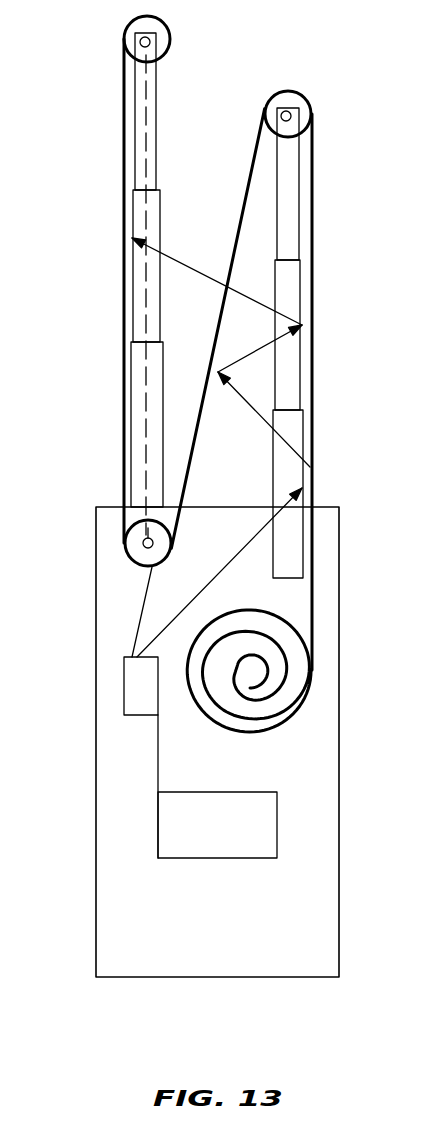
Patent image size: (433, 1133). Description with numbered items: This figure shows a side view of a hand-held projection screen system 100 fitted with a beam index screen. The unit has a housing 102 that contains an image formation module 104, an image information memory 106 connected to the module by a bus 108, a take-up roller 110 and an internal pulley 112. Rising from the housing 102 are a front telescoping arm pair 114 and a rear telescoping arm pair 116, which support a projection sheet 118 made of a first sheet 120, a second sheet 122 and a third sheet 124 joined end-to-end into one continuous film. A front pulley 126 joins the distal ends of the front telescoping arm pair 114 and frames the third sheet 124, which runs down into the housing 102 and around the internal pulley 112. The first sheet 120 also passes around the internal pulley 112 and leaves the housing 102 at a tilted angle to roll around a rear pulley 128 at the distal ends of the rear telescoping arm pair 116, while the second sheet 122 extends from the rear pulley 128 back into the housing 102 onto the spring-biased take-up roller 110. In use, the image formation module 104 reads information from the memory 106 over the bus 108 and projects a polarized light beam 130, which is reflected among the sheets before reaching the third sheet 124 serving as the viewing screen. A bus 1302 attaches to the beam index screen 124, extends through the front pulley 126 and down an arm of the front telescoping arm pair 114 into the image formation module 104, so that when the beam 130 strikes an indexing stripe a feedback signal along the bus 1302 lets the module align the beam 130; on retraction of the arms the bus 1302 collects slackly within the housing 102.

The hand-held projection screen system 100 is at (146, 1005).
The housing 102 is at (96, 598).
The image formation module 104 is at (124, 673).
The image information memory 106 is at (168, 860).
The bus 108 is at (157, 763).
The take-up roller 110 is at (282, 723).
The internal pulley 112 is at (133, 542).
The front telescoping arm pair 114 is at (140, 432).
The rear telescoping arm pair 116 is at (290, 545).
The projection sheet 118 is at (313, 425).
The first sheet 120 is at (247, 203).
The second sheet 122 is at (312, 200).
The third sheet 124 is at (124, 308).
The front pulley 126 is at (135, 28).
The rear pulley 128 is at (297, 104).
The linearly polarized light beam 130 is at (232, 563).
The bus 1302 is at (150, 597).